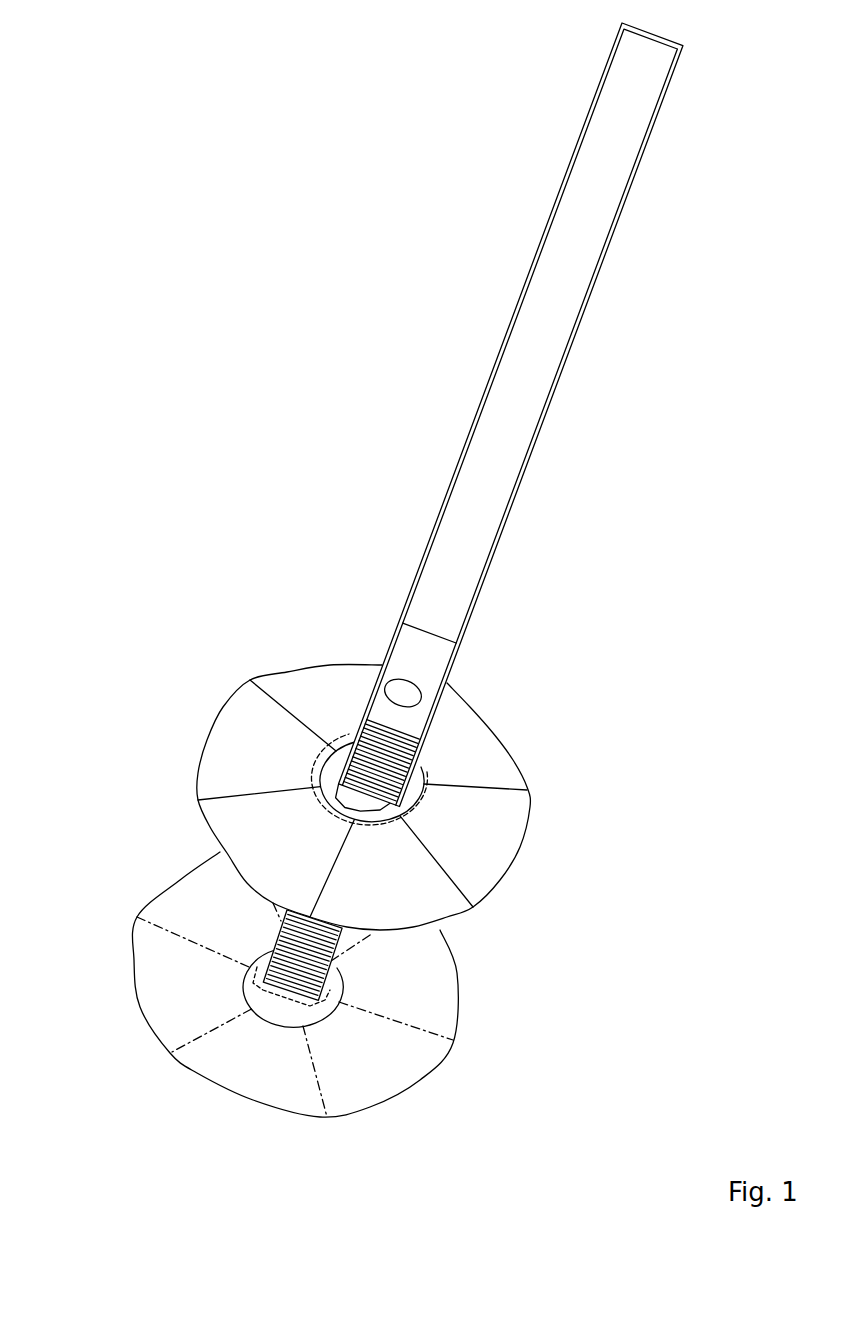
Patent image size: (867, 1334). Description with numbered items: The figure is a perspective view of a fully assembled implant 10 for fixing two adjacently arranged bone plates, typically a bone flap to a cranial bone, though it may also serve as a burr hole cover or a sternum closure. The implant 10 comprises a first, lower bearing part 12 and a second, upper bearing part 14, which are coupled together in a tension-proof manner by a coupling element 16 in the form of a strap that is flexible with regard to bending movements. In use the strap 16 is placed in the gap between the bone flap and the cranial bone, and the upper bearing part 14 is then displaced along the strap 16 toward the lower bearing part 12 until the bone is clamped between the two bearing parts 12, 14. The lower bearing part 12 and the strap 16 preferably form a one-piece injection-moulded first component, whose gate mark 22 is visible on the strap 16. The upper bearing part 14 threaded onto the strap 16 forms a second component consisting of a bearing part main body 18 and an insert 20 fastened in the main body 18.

The implant 10 is at (215, 262).
The lower bearing part 12 is at (502, 1028).
The upper bearing part 14 is at (400, 762).
The coupling element 16 is at (473, 511).
The bearing part main body 18 is at (312, 694).
The insert 20 is at (333, 790).
The gate mark 22 is at (400, 690).